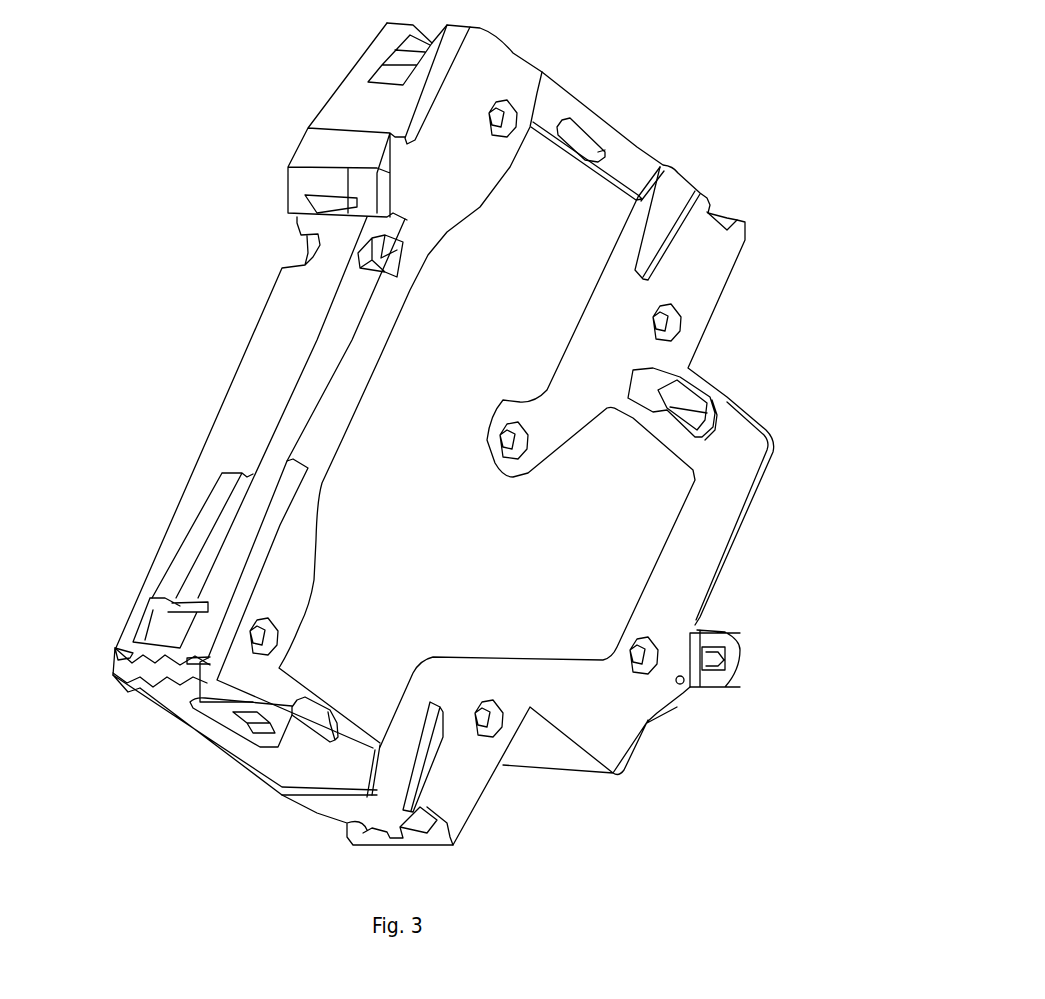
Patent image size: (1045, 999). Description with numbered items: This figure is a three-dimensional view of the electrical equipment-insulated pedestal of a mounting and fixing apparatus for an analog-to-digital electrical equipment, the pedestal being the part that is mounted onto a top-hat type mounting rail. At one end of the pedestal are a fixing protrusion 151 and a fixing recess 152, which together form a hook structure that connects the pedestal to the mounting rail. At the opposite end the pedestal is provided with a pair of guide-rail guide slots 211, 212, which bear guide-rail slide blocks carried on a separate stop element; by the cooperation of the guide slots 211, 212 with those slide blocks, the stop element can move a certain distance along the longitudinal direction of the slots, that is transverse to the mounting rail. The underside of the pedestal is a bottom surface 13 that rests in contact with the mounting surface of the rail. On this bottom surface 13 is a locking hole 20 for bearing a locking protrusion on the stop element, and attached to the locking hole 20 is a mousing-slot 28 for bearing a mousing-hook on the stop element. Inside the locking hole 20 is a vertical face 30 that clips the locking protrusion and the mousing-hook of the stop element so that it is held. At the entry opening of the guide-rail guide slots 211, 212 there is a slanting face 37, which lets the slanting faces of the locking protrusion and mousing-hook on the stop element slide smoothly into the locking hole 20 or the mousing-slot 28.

The bottom surface 13 is at (268, 350).
The fixing protrusion 151 is at (398, 212).
The fixing recess 152 is at (400, 218).
The mousing-slot 28 is at (200, 545).
The guide-rail guide slot 211 is at (115, 657).
The locking hole 20 is at (133, 675).
The vertical face 30 is at (153, 657).
The slanting face 37 is at (177, 670).
The guide-rail guide slot 212 is at (200, 660).